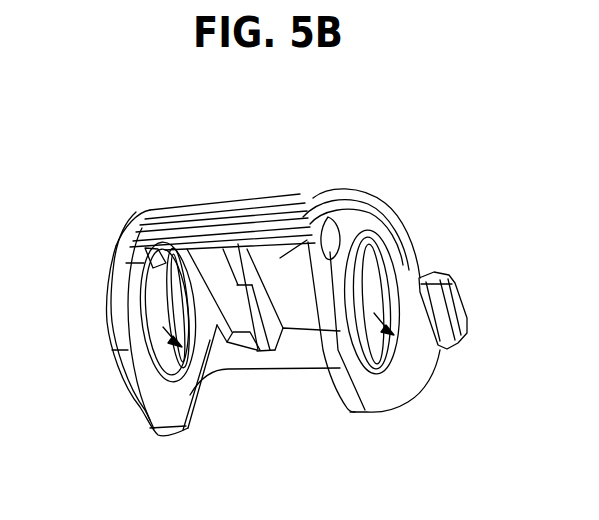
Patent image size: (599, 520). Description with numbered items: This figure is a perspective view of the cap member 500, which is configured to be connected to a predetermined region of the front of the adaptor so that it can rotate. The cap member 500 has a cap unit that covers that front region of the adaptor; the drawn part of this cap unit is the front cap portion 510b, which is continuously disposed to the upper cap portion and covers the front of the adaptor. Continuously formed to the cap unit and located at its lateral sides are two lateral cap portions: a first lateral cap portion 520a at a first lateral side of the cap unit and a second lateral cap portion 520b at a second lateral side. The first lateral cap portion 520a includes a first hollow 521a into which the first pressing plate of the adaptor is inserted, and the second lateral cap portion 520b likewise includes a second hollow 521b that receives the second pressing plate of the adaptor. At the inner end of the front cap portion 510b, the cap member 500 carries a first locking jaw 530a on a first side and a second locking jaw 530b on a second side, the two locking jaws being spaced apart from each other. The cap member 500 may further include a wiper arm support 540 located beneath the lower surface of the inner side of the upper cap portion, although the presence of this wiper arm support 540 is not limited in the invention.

The cap member 500 is at (462, 133).
The front cap portion 510b is at (218, 203).
The second locking jaw 530b is at (284, 258).
The first locking jaw 530a is at (144, 270).
The second lateral cap portion 520b is at (170, 410).
The second hollow 521b is at (200, 395).
The wiper arm support 540 is at (293, 298).
The first lateral cap portion 520a is at (380, 392).
The first hollow 521a is at (415, 387).